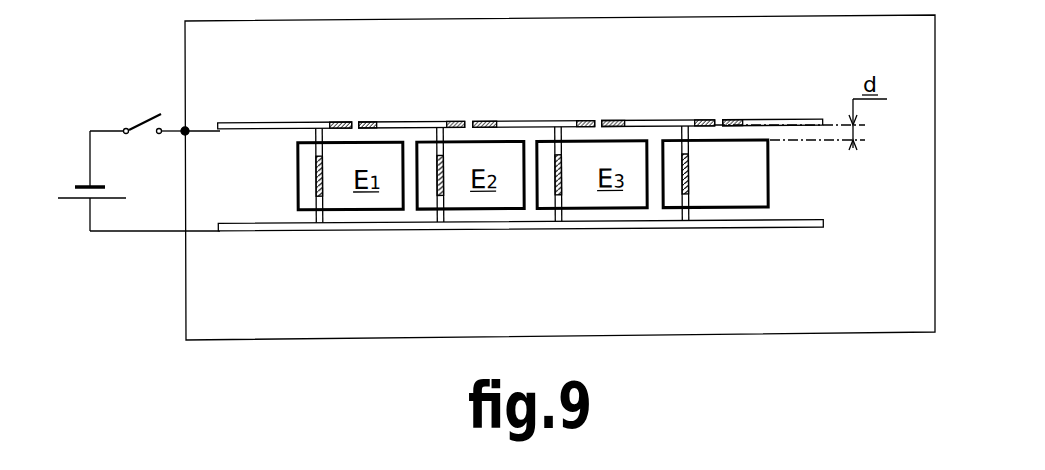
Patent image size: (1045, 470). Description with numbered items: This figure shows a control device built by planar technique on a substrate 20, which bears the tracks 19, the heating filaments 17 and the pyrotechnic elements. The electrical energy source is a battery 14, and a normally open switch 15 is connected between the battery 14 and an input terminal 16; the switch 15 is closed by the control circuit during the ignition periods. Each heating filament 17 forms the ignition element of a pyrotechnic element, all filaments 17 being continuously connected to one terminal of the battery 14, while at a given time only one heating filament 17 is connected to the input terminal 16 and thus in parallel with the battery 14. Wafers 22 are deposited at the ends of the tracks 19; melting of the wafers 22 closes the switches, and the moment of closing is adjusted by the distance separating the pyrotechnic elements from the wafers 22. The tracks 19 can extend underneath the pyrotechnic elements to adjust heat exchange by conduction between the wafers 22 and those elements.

The battery 14 is at (72, 199).
The normally open switch 15 is at (134, 122).
The input terminal 16 is at (187, 128).
The heating filament 17 is at (324, 178).
The track 19 is at (670, 119).
The substrate 20 is at (845, 320).
The wafer 22 is at (372, 121).